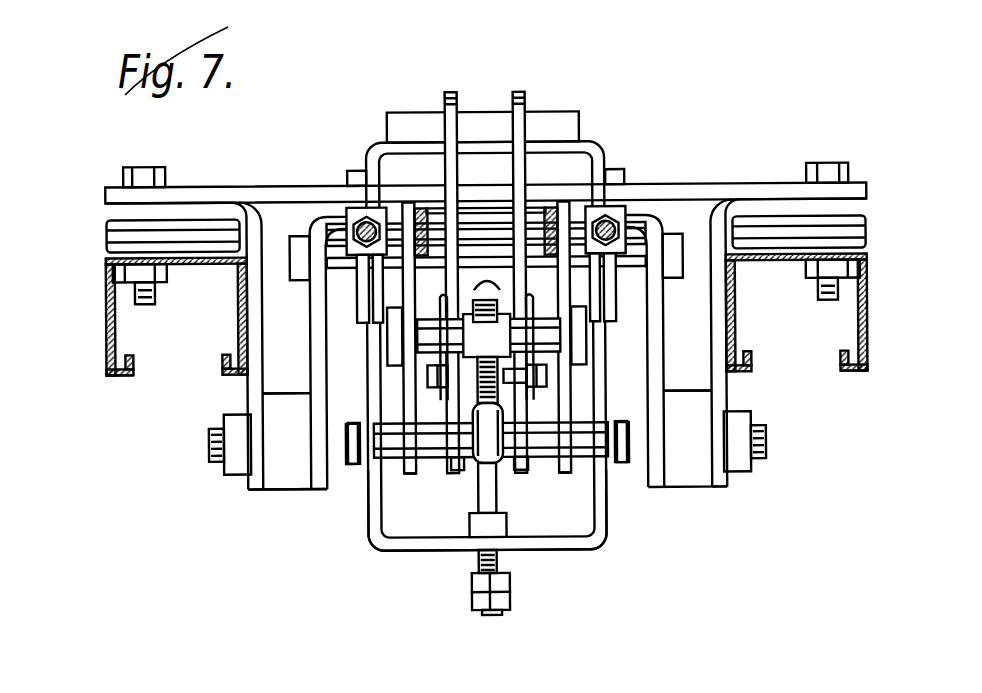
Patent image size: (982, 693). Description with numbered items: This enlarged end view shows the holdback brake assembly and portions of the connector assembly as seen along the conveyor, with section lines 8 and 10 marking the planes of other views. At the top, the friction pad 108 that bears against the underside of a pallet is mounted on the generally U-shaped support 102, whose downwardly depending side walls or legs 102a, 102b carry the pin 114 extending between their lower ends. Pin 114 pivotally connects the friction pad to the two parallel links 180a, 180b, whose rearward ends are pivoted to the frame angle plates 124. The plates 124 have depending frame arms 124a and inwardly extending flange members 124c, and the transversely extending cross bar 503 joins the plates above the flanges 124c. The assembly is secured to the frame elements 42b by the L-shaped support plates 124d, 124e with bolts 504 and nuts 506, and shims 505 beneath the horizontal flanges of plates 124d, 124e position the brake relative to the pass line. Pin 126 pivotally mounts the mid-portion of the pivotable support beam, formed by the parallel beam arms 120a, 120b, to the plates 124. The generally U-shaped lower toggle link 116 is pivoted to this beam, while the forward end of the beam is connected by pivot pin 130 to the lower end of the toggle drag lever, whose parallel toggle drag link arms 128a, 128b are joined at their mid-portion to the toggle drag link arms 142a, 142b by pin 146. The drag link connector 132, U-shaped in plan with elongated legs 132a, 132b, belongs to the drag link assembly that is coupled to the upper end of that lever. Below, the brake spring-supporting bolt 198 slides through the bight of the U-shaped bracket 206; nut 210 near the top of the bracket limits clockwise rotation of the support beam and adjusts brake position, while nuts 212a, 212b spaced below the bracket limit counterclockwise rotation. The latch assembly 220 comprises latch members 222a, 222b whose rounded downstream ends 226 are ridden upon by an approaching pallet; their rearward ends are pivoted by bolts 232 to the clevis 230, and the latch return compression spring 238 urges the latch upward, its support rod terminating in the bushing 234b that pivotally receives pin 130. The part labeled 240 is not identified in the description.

The section line 8- 8 is at (362, 100).
The section line 10- 10 is at (505, 20).
The frame elements 42b is at (107, 340).
The U-shaped support 102 is at (589, 142).
The side wall 102a is at (352, 175).
The side wall 102b is at (602, 168).
The friction pad 108 is at (548, 112).
The pin 114 is at (480, 226).
The lower toggle link 116 is at (358, 392).
The beam arm 120a is at (362, 483).
The beam arm 120b is at (612, 478).
The frame angle plates 124 is at (312, 338).
The depending frame arms 124a is at (318, 466).
The flange members 124c is at (648, 212).
The L-shaped support plate 124d is at (115, 213).
The L-shaped support plate 124e is at (862, 213).
The pin 126 is at (633, 250).
The toggle drag link arm 128a is at (395, 480).
The toggle drag link arm 128b is at (565, 465).
The pivot pin 130 is at (632, 441).
The drag link connector 132 is at (612, 207).
The elongated leg 132a is at (424, 256).
The elongated leg 132b is at (551, 256).
The link arm 142a is at (325, 378).
The link arm 142b is at (640, 365).
The pin 146 is at (387, 338).
The link 180a is at (362, 292).
The link 180b is at (612, 290).
The brake spring-supporting bolt 198 is at (482, 560).
The U-shaped bracket 206 is at (598, 545).
The nut 210 is at (505, 525).
The nut 212a is at (508, 581).
The nut 212b is at (505, 604).
The latch assembly 220 is at (520, 92).
The latch member 222a is at (430, 190).
The latch member 222b is at (562, 202).
The downstream end 226 is at (452, 92).
The latch return bracket 230 is at (588, 329).
The bolts 232 is at (438, 390).
The bushing 234b is at (480, 440).
The latch return compression spring 238 is at (534, 390).
The threaded screw 240 is at (487, 283).
The cross bar 503 is at (256, 188).
The bolts 504 is at (133, 178).
The shims 505 is at (122, 238).
The nuts 506 is at (128, 270).